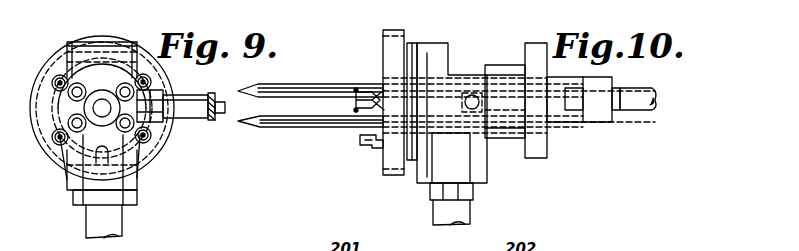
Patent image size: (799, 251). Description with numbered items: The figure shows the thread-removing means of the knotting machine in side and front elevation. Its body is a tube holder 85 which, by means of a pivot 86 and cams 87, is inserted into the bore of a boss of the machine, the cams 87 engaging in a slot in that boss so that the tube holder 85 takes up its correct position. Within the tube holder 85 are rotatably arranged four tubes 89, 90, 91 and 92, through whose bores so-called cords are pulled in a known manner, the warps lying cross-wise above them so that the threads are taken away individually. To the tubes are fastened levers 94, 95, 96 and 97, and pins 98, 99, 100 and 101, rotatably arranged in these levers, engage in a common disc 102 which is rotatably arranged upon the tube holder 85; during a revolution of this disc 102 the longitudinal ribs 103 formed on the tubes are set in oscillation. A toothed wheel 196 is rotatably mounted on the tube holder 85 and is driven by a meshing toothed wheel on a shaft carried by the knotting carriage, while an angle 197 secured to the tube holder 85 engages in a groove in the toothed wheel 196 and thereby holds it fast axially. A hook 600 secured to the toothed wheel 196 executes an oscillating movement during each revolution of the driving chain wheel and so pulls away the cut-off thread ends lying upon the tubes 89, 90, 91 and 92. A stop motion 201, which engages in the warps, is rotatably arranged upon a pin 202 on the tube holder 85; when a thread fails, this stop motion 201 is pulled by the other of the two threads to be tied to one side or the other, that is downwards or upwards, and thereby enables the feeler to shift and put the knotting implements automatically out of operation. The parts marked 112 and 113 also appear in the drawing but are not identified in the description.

In FIG. 9, the tube holder 85 is at (137, 192).
In FIG. 10, the tube holder 85 is at (447, 64).
In FIG. 9, the pivot 86 is at (104, 221).
In FIG. 10, the pivot 86 is at (463, 212).
In FIG. 9, the cams 87 is at (77, 204).
In FIG. 10, the cams 87 is at (452, 190).
In FIG. 9, the tube 89 is at (75, 42).
In FIG. 10, the tube 89 is at (298, 86).
In FIG. 9, the tube 90 is at (102, 97).
In FIG. 9, the tube 91 is at (68, 160).
In FIG. 10, the tube 91 is at (307, 128).
In FIG. 9, the tube 92 is at (138, 146).
In FIG. 9, the lever 94 is at (60, 76).
In FIG. 10, the lever 94 is at (499, 67).
In FIG. 9, the lever 95 is at (157, 67).
In FIG. 9, the lever 96 is at (60, 146).
In FIG. 10, the lever 96 is at (510, 140).
In FIG. 9, the lever 97 is at (150, 143).
In FIG. 9, the pin 98 is at (55, 80).
In FIG. 9, the pin 99 is at (160, 115).
In FIG. 9, the pin 100 is at (55, 140).
In FIG. 9, the pin 101 is at (150, 130).
In FIG. 9, the disc 102 is at (170, 124).
In FIG. 10, the disc 102 is at (537, 35).
In FIG. 10, the longitudinal ribs 103 is at (332, 90).
In FIG. 10, the toggle link 112 is at (358, 88).
In FIG. 10, the end fitting 113 is at (643, 108).
In FIG. 9, the toothed wheel 196 is at (146, 44).
In FIG. 10, the toothed wheel 196 is at (383, 36).
In FIG. 9, the angle 197 is at (67, 48).
In FIG. 10, the angle 197 is at (417, 46).
In FIG. 10, the stop motion 201 is at (244, 124).
In FIG. 9, the pin 202 is at (197, 95).
In FIG. 10, the hook 600 is at (370, 146).